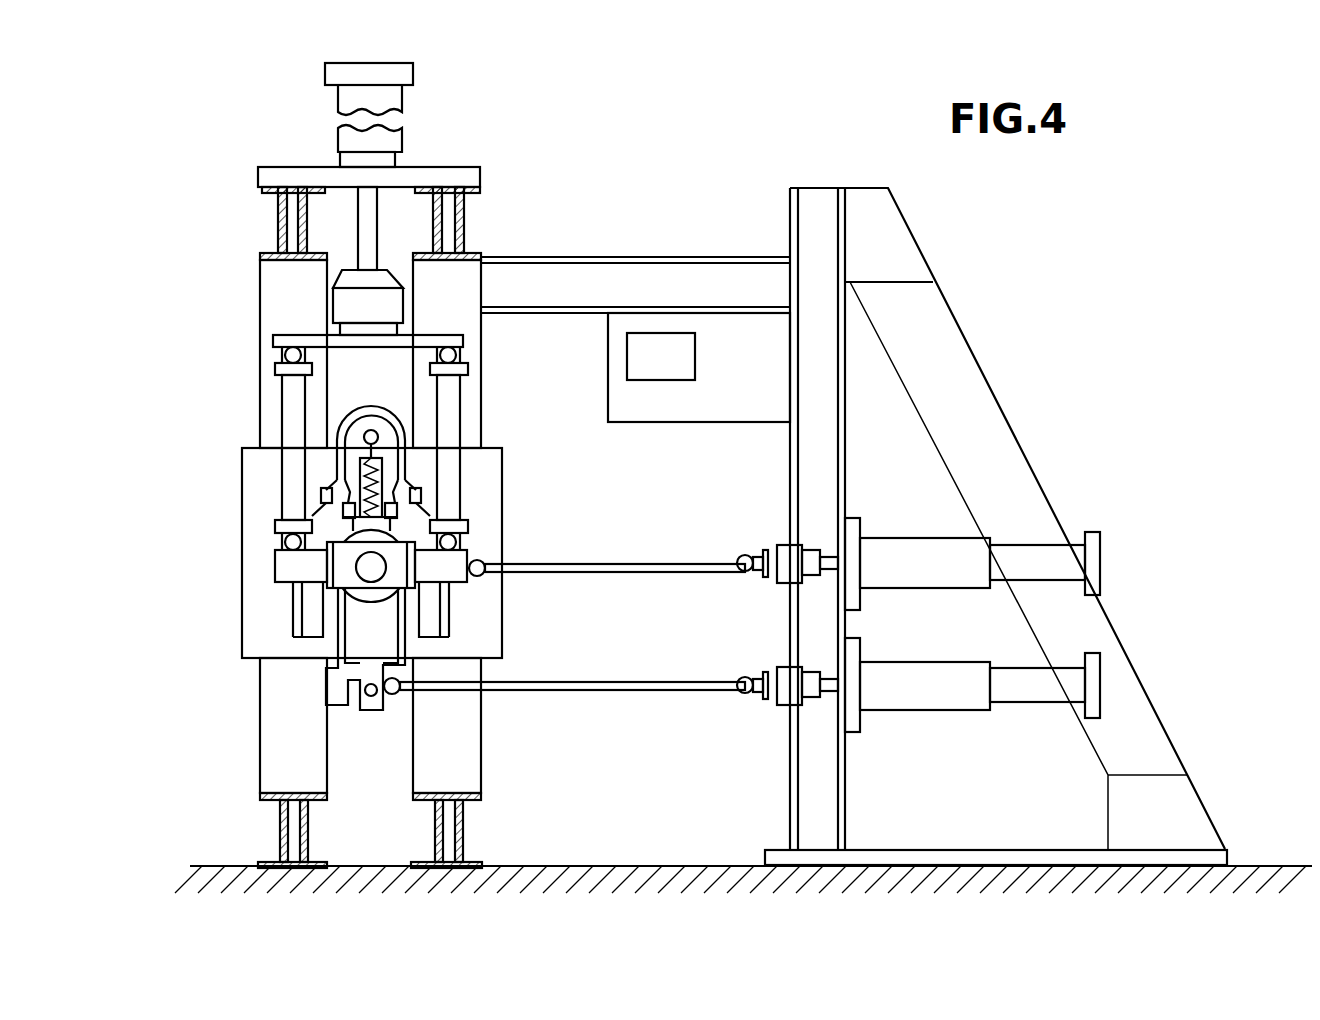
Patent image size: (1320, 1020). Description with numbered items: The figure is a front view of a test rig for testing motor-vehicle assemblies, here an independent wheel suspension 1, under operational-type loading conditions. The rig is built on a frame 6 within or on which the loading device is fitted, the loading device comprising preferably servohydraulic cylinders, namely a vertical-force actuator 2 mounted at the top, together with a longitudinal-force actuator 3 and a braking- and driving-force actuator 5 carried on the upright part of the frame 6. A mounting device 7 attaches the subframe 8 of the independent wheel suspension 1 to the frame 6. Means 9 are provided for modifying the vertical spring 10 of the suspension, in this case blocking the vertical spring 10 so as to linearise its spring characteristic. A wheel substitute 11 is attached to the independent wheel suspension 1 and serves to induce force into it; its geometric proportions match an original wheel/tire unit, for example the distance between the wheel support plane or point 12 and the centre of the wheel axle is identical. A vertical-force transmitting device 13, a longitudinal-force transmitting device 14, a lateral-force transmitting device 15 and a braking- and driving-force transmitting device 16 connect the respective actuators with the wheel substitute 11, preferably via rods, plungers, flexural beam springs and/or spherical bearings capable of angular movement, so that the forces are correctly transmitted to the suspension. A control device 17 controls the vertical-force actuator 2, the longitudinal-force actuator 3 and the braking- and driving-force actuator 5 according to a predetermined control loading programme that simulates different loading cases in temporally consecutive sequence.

The independent wheel suspension 1 is at (304, 514).
The vertical-force actuator 2 is at (388, 102).
The longitudinal-force actuator 3 is at (1037, 557).
The braking- and driving-force actuator 5 is at (1047, 677).
The frame 6 is at (275, 291).
The mounting device 7 is at (487, 492).
The subframe 8 is at (333, 432).
The means for modifying vertical spring 9 is at (360, 476).
The vertical spring 10 is at (326, 488).
The wheel substitute 11 is at (363, 566).
The wheel support plane 12 is at (372, 706).
The vertical-force transmitting device 13 is at (458, 408).
The longitudinal-force transmitting device 14 is at (598, 563).
The lateral-force transmitting device 15 is at (325, 686).
The braking- and driving-force transmitting device 16 is at (628, 690).
The control device 17 is at (738, 412).